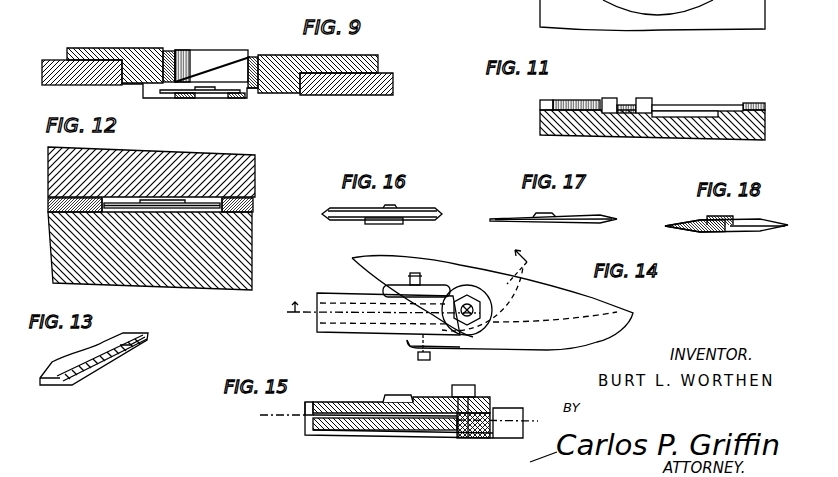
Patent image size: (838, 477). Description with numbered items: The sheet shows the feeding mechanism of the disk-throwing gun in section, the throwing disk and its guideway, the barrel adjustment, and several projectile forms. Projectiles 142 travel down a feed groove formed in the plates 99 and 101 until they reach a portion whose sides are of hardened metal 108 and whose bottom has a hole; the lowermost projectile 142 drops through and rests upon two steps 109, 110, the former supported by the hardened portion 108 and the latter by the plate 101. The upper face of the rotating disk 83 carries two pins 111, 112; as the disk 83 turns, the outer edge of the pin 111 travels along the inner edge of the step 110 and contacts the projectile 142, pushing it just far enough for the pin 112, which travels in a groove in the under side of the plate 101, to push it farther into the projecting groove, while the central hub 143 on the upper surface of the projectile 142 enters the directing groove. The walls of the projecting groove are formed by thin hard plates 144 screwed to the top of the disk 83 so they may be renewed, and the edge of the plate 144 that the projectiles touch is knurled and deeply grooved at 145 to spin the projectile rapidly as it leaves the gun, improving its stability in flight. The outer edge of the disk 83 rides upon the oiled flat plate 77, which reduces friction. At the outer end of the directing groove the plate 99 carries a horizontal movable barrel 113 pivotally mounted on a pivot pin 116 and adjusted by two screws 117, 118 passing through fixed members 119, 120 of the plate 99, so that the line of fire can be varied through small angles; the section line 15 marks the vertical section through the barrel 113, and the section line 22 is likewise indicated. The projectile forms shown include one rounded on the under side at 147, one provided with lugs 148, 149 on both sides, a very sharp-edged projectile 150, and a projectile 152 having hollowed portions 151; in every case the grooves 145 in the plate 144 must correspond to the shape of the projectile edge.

In FIG. 14, the section line 15— 15 is at (408, 281).
In FIG. 15, the section line 22- 22 is at (389, 421).
In FIG. 15, the flat plate 77 is at (473, 432).
In FIG. 12, the rotating disk 83 is at (243, 233).
In FIG. 11, the rotating disk 83 is at (724, 137).
In FIG. 15, the rotating disk 83 is at (480, 431).
In FIG. 9, the plate 99 is at (343, 95).
In FIG. 12, the plate 99 is at (247, 162).
In FIG. 14, the plate 99 is at (562, 333).
In FIG. 15, the plate 99 is at (497, 405).
In FIG. 9, the plate 101 is at (143, 48).
In FIG. 9, the hardened metal 108 is at (253, 57).
In FIG. 9, the step 109 is at (240, 100).
In FIG. 9, the step 110 is at (180, 99).
In FIG. 11, the pin 111 is at (646, 97).
In FIG. 9, the pin 112 is at (133, 91).
In FIG. 11, the pin 112 is at (607, 97).
In FIG. 14, the barrel 113 is at (357, 325).
In FIG. 15, the barrel 113 is at (333, 407).
In FIG. 14, the pivot pin 116 is at (470, 312).
In FIG. 15, the pivot pin 116 is at (463, 387).
In FIG. 14, the screw 117 is at (408, 278).
In FIG. 14, the screw 118 is at (420, 361).
In FIG. 14, the fixed member 119 is at (427, 289).
In FIG. 14, the fixed member 120 is at (442, 348).
In FIG. 9, the projectile 142 is at (210, 93).
In FIG. 9, the hub 143 is at (212, 90).
In FIG. 12, the thin hard plate 144 is at (252, 208).
In FIG. 13, the thin hard plate 144 is at (62, 363).
In FIG. 13, the knurling and grooves 145 is at (135, 350).
In FIG. 12, the rounded under side 147 is at (168, 208).
In FIG. 16, the lug 148 is at (400, 208).
In FIG. 16, the lug 149 is at (390, 224).
In FIG. 17, the blade 150 is at (578, 217).
In FIG. 18, the hollowed portion 151 is at (717, 215).
In FIG. 18, the projectile 152 is at (740, 229).